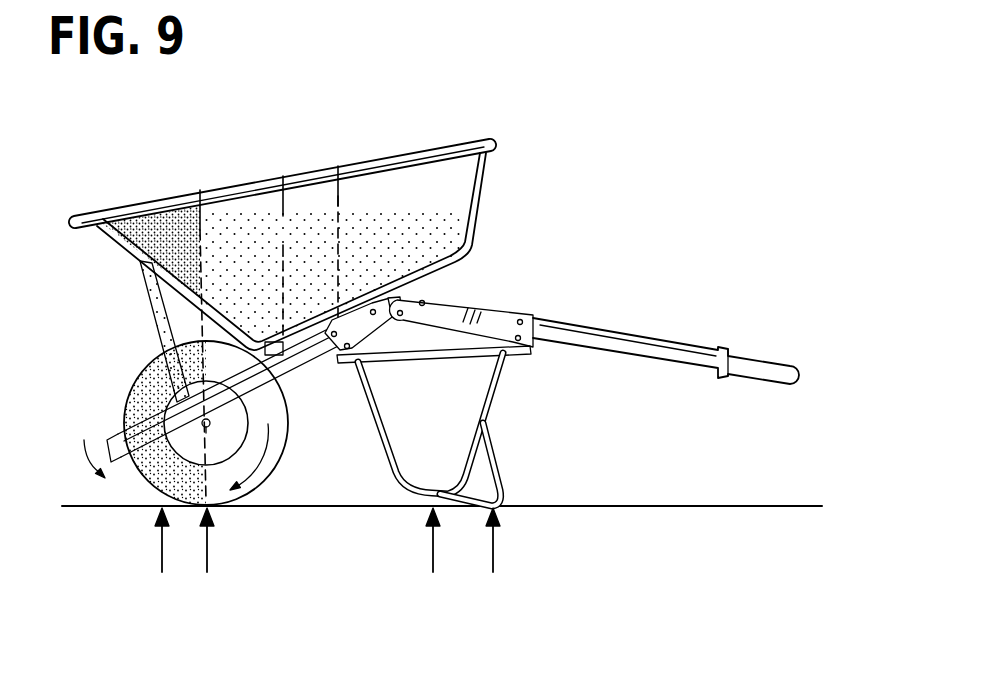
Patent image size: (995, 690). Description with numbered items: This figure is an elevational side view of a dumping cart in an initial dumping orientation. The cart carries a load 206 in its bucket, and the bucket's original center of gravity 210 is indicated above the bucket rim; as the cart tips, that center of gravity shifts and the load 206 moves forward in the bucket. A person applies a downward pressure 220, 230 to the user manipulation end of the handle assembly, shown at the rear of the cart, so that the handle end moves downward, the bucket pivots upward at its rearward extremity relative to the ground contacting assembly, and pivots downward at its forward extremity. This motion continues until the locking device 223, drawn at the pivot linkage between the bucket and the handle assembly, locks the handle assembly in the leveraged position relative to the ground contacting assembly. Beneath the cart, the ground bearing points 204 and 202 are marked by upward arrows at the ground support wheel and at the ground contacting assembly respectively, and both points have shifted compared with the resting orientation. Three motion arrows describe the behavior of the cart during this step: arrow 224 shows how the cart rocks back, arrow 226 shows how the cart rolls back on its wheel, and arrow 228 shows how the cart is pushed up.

The ground bearing point 202 is at (465, 577).
The ground bearing point 204 is at (182, 580).
The load 206 is at (122, 243).
The center of gravity 210 is at (340, 150).
The downward pressure 220 is at (776, 449).
The locking device 223 is at (426, 286).
The arrow 224 is at (511, 411).
The arrow 226 is at (82, 445).
The arrow 228 is at (335, 370).
The downward pressure 230 is at (543, 296).